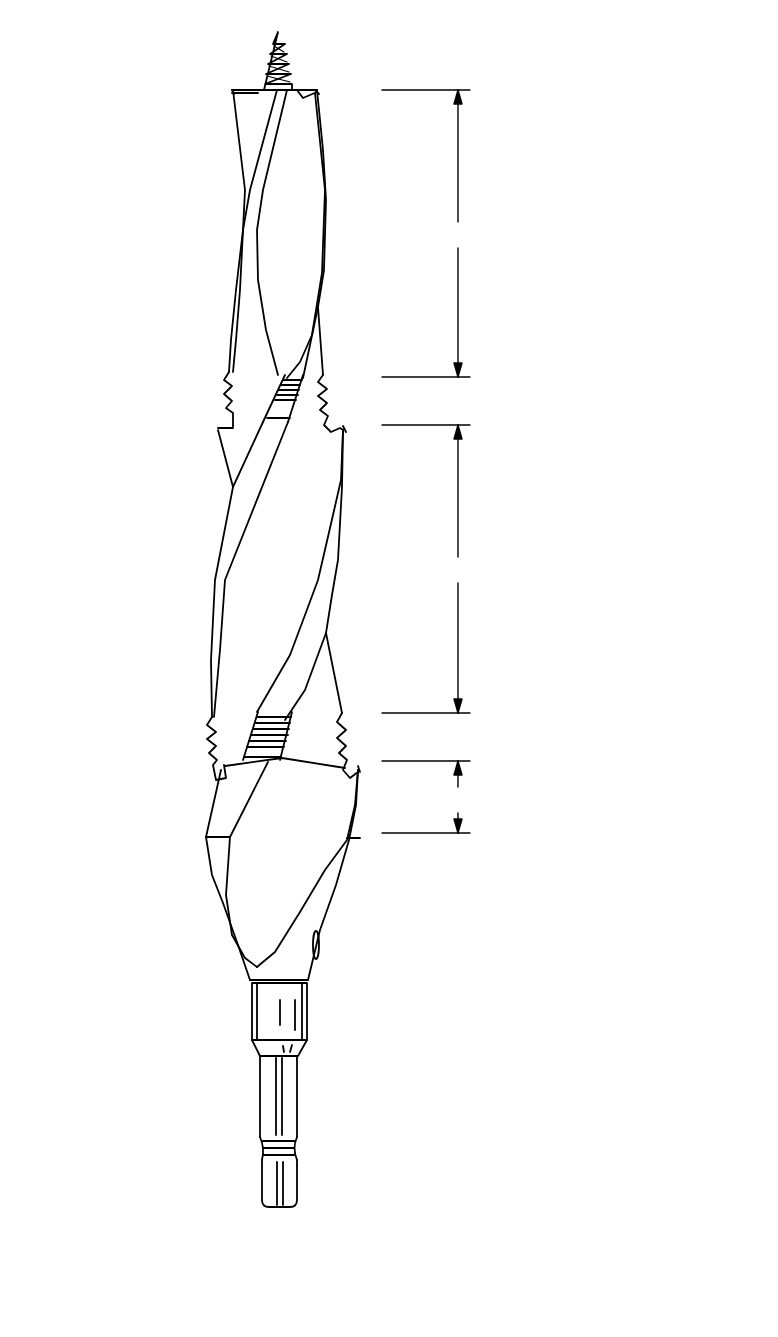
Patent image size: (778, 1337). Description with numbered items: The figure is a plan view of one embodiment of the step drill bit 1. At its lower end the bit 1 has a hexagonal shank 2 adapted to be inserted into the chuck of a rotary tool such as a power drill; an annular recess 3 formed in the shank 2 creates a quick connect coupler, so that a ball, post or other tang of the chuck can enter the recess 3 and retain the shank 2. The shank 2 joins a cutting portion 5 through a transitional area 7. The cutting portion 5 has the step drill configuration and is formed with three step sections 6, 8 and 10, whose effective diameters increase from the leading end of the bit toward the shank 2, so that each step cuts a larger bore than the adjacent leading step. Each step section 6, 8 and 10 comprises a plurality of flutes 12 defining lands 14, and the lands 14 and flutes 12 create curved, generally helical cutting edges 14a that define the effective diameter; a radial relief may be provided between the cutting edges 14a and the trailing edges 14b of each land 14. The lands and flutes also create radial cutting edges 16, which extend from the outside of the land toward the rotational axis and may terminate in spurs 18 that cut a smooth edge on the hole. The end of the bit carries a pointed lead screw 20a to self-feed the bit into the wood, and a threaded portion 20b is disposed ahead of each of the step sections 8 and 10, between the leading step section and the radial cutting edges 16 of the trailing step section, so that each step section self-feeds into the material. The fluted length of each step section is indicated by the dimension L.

The bit 1 is at (514, 446).
The shank 2 is at (299, 1073).
The annular recess 3 is at (260, 1150).
The cutting portion 5 is at (117, 48).
The first step section 6 is at (163, 245).
The transitional area 7 is at (308, 1005).
The second step section 8 is at (170, 577).
The third step section 10 is at (143, 840).
The flutes 12 is at (302, 202).
The lands 14 is at (240, 97).
The cutting edges 14a is at (237, 145).
The trailing edges 14b is at (235, 240).
The radial cutting edges 16 is at (247, 86).
The spurs 18 is at (231, 90).
The pointed lead screw 20a is at (285, 43).
The threaded portion 20b is at (318, 380).